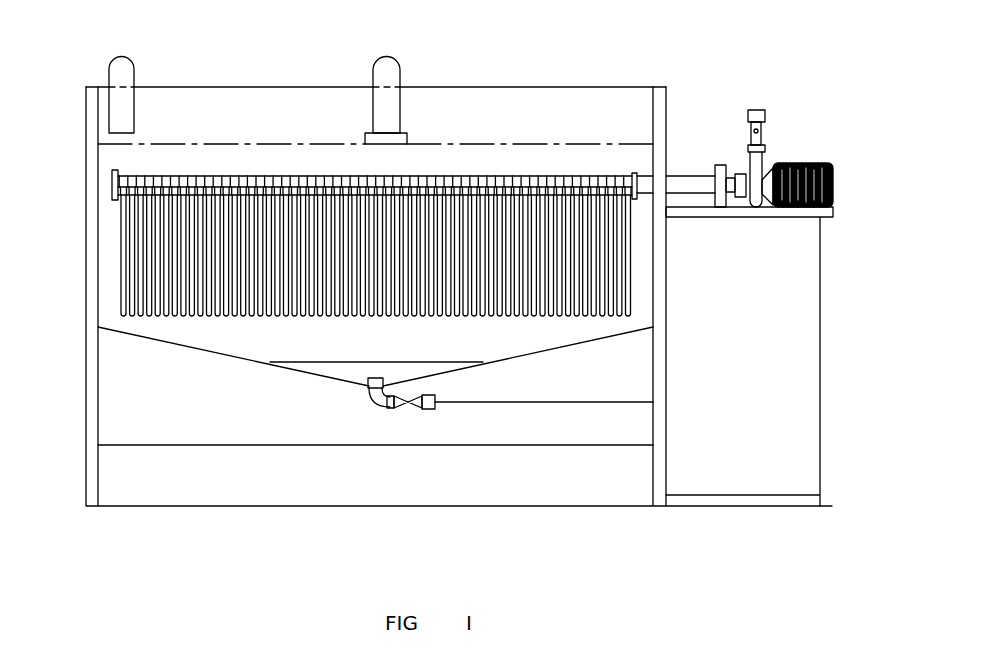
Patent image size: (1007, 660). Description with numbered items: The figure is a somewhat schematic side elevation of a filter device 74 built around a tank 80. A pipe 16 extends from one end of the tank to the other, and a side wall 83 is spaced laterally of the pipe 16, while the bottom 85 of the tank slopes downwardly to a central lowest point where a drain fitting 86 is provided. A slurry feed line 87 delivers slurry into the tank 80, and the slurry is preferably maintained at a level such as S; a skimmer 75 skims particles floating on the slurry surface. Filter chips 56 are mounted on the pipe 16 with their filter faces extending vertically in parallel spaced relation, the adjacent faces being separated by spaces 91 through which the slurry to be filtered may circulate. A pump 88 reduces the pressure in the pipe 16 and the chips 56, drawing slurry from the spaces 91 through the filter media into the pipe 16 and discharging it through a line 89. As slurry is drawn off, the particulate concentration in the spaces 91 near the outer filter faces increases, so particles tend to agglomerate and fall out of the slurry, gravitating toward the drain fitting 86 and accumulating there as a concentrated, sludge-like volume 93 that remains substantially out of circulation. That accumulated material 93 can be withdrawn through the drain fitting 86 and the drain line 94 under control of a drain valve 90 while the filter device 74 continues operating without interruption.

The tank 80 is at (553, 86).
The side wall 83 is at (213, 100).
The slurry feed line 87 is at (117, 57).
The skimmer 75 is at (406, 134).
The slurry level S is at (252, 143).
The pipe 16 is at (650, 176).
The filter chips 56 is at (443, 317).
The spaces 91 is at (491, 317).
The bottom 85 is at (561, 351).
The volume of accumulated material 93 is at (342, 370).
The drain fitting 86 is at (386, 384).
The drain valve 90 is at (406, 403).
The drain line 94 is at (525, 403).
The filter device 74 is at (470, 515).
The pump 88 is at (772, 165).
The line 89 is at (757, 110).